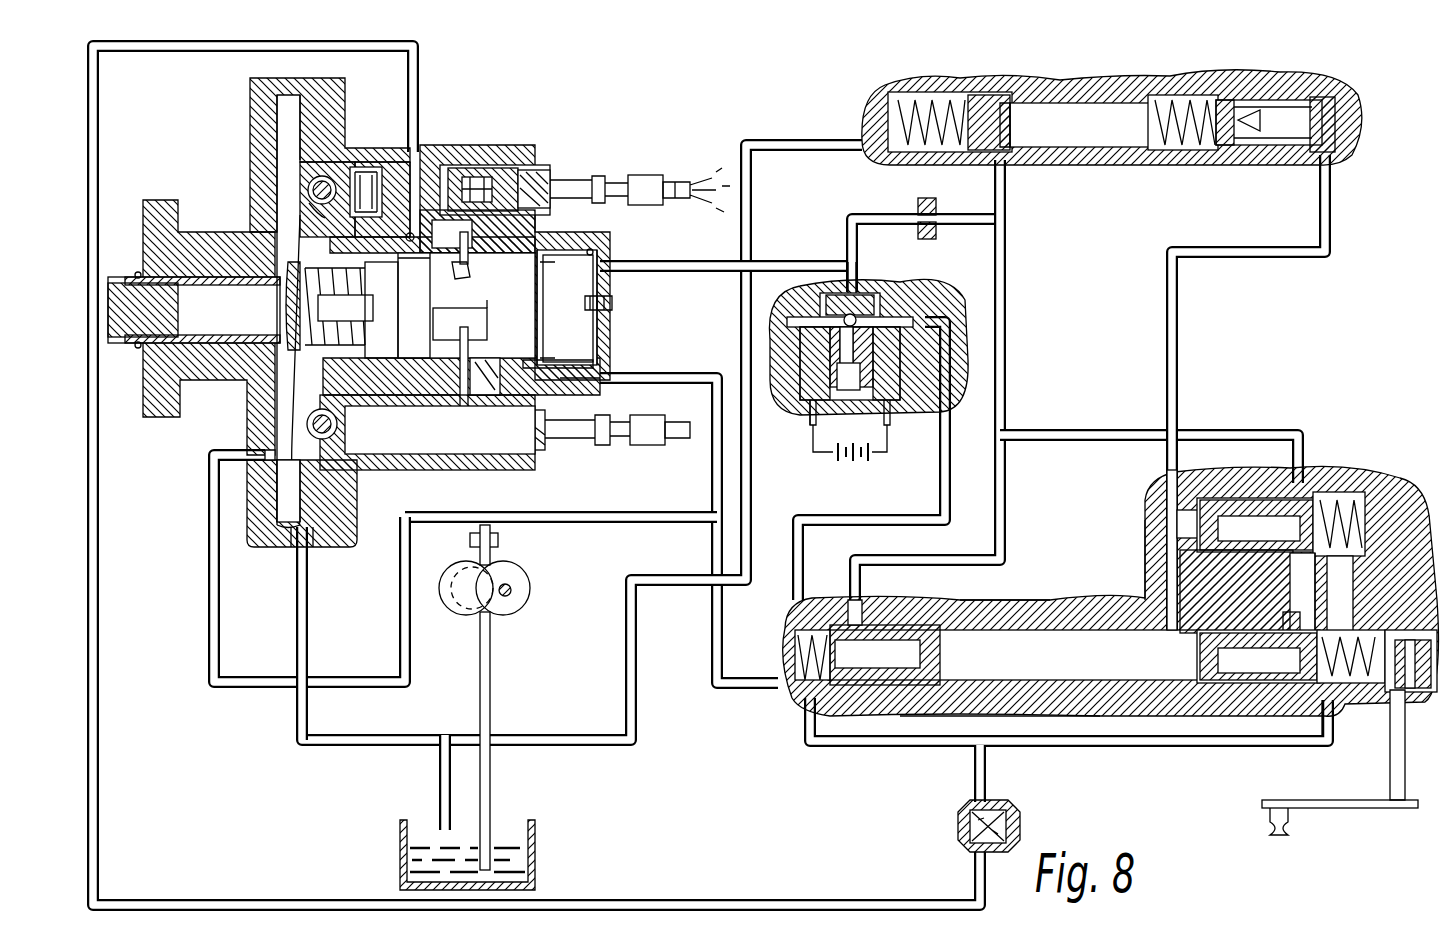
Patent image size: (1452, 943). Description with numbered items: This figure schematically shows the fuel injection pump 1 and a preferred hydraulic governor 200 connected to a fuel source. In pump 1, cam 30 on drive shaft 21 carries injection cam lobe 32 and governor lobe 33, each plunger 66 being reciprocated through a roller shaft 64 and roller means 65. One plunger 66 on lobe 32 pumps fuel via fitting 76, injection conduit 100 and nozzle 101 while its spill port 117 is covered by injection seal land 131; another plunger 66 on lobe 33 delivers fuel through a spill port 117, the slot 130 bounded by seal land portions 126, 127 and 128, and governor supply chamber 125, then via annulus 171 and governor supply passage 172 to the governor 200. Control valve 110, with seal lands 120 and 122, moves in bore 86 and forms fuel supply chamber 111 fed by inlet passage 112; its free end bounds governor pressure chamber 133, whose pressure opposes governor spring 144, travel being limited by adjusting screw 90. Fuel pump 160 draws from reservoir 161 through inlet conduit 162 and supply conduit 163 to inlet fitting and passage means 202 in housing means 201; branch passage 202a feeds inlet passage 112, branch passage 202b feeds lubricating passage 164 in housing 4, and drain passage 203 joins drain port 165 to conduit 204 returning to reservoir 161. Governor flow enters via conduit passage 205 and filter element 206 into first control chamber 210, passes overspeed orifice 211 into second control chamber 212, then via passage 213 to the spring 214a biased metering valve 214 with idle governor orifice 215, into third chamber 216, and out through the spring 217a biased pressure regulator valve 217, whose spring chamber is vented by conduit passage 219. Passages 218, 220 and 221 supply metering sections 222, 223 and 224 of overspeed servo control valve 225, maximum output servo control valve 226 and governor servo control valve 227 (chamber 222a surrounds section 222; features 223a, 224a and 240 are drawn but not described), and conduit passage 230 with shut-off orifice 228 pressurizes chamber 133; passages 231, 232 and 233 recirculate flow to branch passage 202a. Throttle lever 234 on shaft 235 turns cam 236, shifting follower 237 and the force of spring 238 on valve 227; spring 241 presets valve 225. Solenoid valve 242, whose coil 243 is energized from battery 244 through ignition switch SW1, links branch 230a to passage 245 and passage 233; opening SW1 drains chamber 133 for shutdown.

The fuel injection pump 1 is at (513, 104).
The housing 4 is at (532, 142).
The drive shaft 21 is at (220, 295).
The cam 30 is at (300, 112).
The injection cam lobe 32 is at (322, 228).
The governor lobe 33 is at (340, 498).
The roller shaft 64 is at (308, 190).
The cam follower roller means 65 is at (316, 200).
The pump plunger 66 is at (440, 175).
The fitting 76 is at (556, 178).
The bore 86 is at (582, 252).
The adjusting screw 90 is at (614, 300).
The injection conduit 100 is at (612, 182).
The fuel injection nozzle 101 is at (682, 175).
The control valve 110 is at (522, 255).
The fuel supply chamber 111 is at (502, 370).
The inlet passage 112 is at (575, 380).
The spill ports 117 is at (435, 275).
The outboard seal land 120 is at (560, 340).
The inboard seal land 122 is at (356, 358).
The governor fuel supply chamber 125 is at (394, 358).
The axial seal land portion 126 is at (468, 284).
The axial seal land portion 127 is at (436, 358).
The circumferential seal land portion 128 is at (480, 342).
The spill slot 130 is at (484, 318).
The injection seal land 131 is at (462, 252).
The governor pressure chamber 133 is at (590, 268).
The governor spring 144 is at (282, 360).
The fuel pump 160 is at (532, 590).
The fuel reservoir 161 is at (535, 852).
The inlet conduit 162 is at (492, 660).
The supply conduit 163 is at (492, 558).
The lubricating passage 164 is at (266, 455).
The drain port 165 is at (293, 548).
The annulus 171 is at (404, 225).
The governor supply passage 172 is at (410, 165).
The hydraulic governor 200 is at (1366, 462).
The housing means 201 is at (878, 98).
The inlet fitting and passage means 202 is at (470, 534).
The inlet branch passage 202a is at (640, 513).
The inlet branch passage 202b is at (407, 686).
The drain passage 203 is at (310, 640).
The conduit 204 is at (440, 790).
The conduit passage 205 is at (430, 72).
The filter element 206 is at (1010, 828).
The first control chamber 210 is at (1038, 640).
The overspeed orifice 211 is at (1078, 682).
The second control chamber 212 is at (1110, 640).
The passage 213 is at (1178, 322).
The metering valve 214 is at (1312, 100).
The spring 214a is at (1196, 103).
The idle governor orifice 215 is at (1236, 118).
The third chamber 216 is at (1108, 105).
The pressure regulator valve 217 is at (992, 100).
The spring 217a is at (938, 100).
The passage 218 is at (1008, 262).
The conduit passage 219 is at (785, 140).
The passage 220 is at (1250, 440).
The passage 221 is at (1290, 566).
The metering section 222 is at (835, 607).
The chamber 222a is at (868, 618).
The metering section 223 is at (1298, 480).
The piston 223a is at (1292, 518).
The metering section 224 is at (1290, 615).
The land 224a is at (1280, 624).
The overspeed servo control valve 225 is at (905, 628).
The maximum output servo control valve 226 is at (1170, 482).
The governor servo control valve 227 is at (1240, 690).
The shut-off orifice 228 is at (935, 205).
The conduit passage 230 is at (808, 262).
The branch passage 230a is at (858, 293).
The passage 231 is at (1400, 552).
The passage 232 is at (1338, 746).
The passage 233 is at (718, 625).
The throttle lever 234 is at (1375, 808).
The rotatable shaft 235 is at (1392, 745).
The cam 236 is at (1410, 640).
The follower 237 is at (1355, 622).
The spring 238 is at (1315, 664).
The spring 240 is at (1372, 518).
The overspeed servo control valve spring 241 is at (790, 648).
The solenoid valve 242 is at (914, 390).
The coil 243 is at (805, 370).
The battery 244 is at (860, 462).
The passage 245 is at (950, 475).
The ignition switch SW1 is at (801, 437).